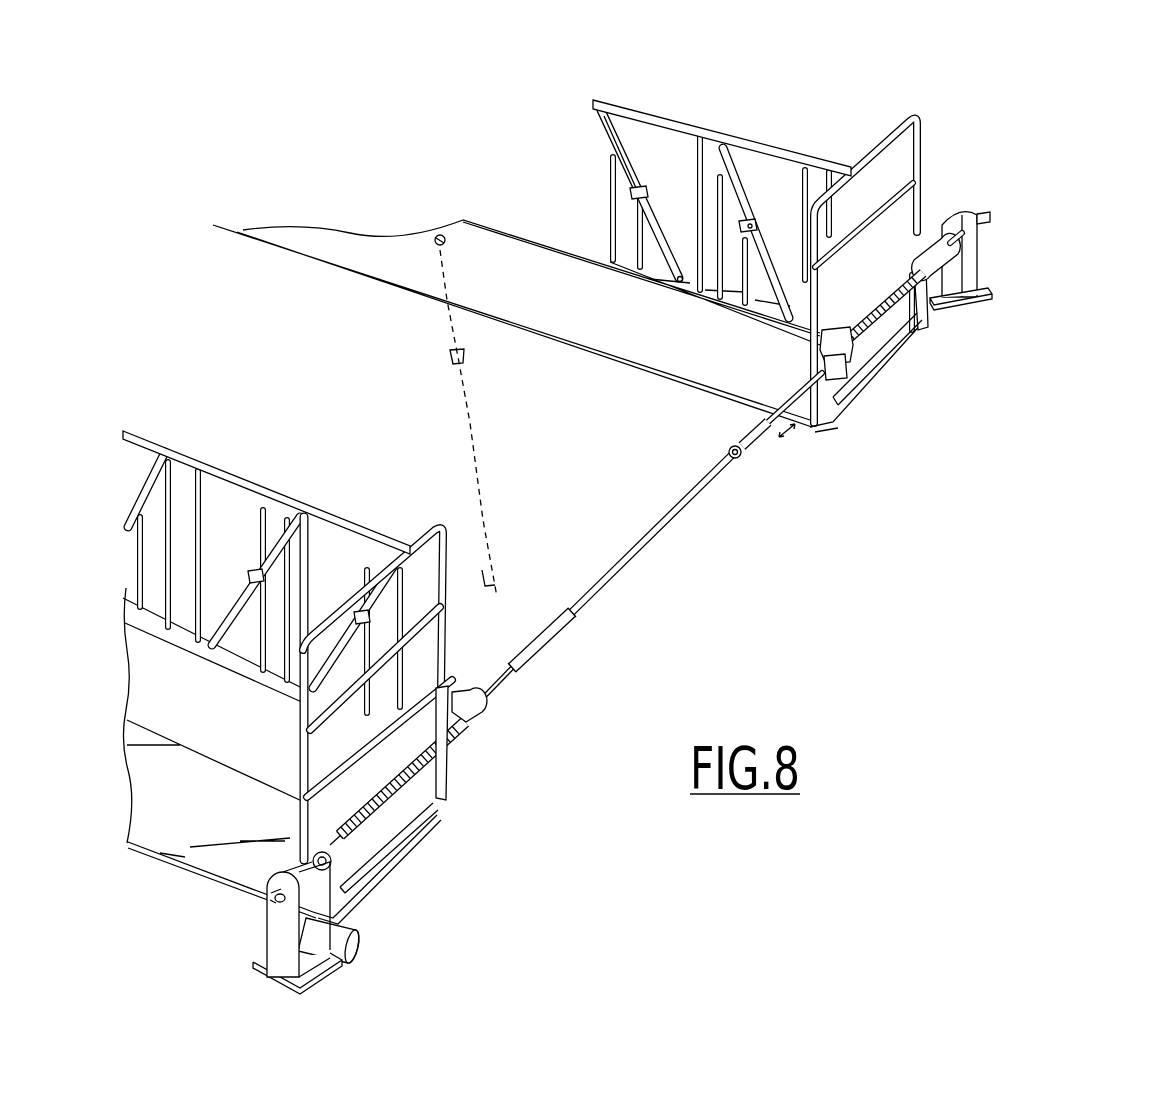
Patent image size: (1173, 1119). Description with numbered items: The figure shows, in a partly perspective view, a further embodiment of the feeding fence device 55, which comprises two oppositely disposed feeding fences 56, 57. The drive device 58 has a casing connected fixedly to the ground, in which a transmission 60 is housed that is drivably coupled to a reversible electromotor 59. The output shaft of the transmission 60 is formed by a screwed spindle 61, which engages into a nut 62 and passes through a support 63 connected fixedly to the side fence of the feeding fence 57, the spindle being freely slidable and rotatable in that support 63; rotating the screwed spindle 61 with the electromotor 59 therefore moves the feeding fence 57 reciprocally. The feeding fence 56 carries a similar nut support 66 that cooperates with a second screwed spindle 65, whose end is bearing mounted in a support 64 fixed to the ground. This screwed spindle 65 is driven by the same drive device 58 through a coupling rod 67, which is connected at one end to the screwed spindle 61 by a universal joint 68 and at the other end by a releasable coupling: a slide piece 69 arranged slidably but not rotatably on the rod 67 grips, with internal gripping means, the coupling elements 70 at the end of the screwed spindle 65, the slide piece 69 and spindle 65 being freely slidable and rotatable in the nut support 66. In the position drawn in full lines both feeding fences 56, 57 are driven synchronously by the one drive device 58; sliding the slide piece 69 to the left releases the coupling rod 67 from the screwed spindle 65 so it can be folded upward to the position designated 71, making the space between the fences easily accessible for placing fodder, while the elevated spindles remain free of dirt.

The feeding fence device 55 is at (788, 84).
The feeding fence 56 is at (755, 217).
The feeding fence 57 is at (318, 510).
The drive device 58 is at (266, 970).
The reversible electromotor 59 is at (355, 948).
The transmission 60 is at (272, 920).
The screwed spindle 61 is at (404, 798).
The nut 62 is at (355, 868).
The support 63 is at (481, 720).
The support 64 is at (980, 290).
The screwed spindle 65 is at (921, 322).
The nut support 66 is at (858, 368).
The coupling rod 67 is at (652, 550).
The universal joint 68 is at (509, 685).
The slide piece 69 is at (765, 436).
The coupling elements 70 is at (833, 393).
The folded-up position of the coupling rod 71 is at (478, 492).